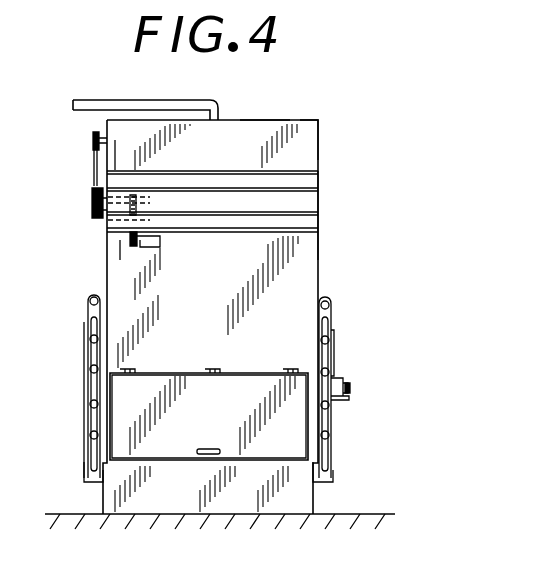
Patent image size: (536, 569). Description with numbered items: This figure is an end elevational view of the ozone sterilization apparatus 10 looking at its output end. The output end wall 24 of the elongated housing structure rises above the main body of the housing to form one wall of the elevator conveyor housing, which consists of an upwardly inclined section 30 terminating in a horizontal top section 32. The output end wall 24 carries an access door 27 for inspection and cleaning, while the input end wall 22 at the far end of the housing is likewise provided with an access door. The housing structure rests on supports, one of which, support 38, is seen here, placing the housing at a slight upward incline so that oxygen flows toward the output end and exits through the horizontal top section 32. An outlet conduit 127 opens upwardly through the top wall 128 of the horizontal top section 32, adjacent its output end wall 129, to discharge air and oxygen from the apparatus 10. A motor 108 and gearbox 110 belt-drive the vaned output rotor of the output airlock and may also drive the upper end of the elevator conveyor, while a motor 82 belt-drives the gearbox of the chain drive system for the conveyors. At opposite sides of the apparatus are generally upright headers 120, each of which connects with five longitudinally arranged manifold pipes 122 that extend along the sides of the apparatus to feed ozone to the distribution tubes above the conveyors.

The ozone sterilization apparatus 10 is at (350, 162).
The input end wall 22 is at (334, 330).
The output end wall 24 is at (212, 302).
The access door 27 is at (209, 414).
The upwardly inclined section 30 is at (320, 240).
The horizontal top section 32 is at (312, 131).
The support 38 is at (320, 494).
The motor 82 is at (338, 380).
The motor 108 is at (147, 247).
The gearbox 110 is at (143, 176).
The header 120 is at (337, 470).
The manifold pipe 122 is at (88, 370).
The outlet conduit 127 is at (118, 100).
The top wall 128 is at (259, 120).
The output end wall 129 is at (212, 145).